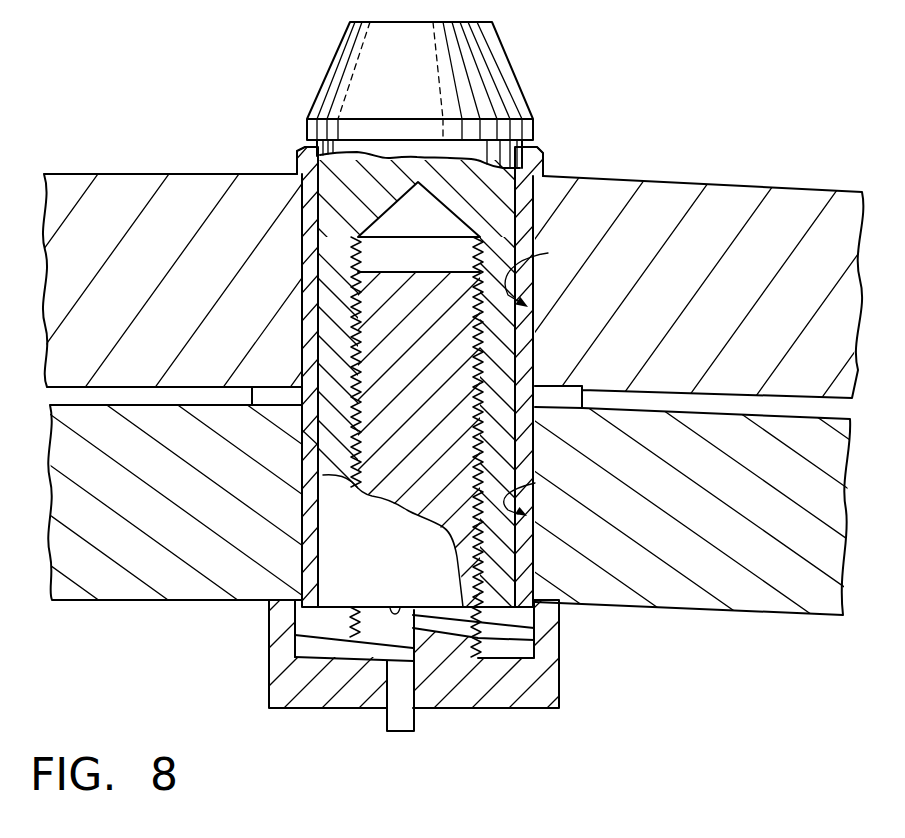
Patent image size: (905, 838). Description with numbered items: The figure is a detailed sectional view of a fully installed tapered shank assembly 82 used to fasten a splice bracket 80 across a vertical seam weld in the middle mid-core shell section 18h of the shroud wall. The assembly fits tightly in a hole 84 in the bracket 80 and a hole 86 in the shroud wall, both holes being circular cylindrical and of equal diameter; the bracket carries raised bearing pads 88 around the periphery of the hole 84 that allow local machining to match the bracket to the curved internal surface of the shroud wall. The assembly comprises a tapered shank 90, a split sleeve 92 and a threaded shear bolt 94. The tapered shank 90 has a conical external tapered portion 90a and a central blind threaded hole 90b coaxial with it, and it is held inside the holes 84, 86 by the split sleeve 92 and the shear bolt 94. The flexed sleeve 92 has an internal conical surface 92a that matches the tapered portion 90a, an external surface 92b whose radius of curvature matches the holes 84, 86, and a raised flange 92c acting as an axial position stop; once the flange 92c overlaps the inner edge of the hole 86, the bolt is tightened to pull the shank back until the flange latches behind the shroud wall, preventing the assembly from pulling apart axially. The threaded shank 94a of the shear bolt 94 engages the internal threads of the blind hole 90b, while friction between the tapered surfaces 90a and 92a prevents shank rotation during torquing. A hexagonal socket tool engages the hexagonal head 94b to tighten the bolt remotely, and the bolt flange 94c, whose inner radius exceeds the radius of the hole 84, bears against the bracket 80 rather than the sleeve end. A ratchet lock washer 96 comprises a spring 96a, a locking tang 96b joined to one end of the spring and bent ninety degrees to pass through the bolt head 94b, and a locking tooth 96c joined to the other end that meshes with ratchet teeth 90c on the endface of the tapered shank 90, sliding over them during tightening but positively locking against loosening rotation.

The middle mid-core shell section 18h is at (822, 180).
The splice bracket 80 is at (750, 595).
The tapered shank assembly 82 is at (268, 70).
The hole in the bracket 84 is at (535, 483).
The hole in the shroud wall 86 is at (548, 253).
The raised bearing pads 88 is at (560, 387).
The tapered shank 90 is at (340, 250).
The tapered portion of shank 90a is at (302, 353).
The central blind threaded hole 90b is at (480, 332).
The ratchet teeth 90c is at (386, 610).
The split sleeve 92 is at (535, 543).
The internal conical surface of sleeve 92a is at (310, 438).
The external surface of sleeve 92b is at (302, 513).
The raised flange 92c is at (543, 165).
The threaded shear bolt 94 is at (572, 703).
The threaded shank of shear bolt 94a is at (318, 462).
The hexagonal head 94b is at (303, 687).
The bolt flange 94c is at (520, 662).
The ratchet lock washer 96 is at (540, 633).
The spring 96a is at (488, 642).
The locking tang 96b is at (400, 732).
The locking tooth 96c is at (418, 607).